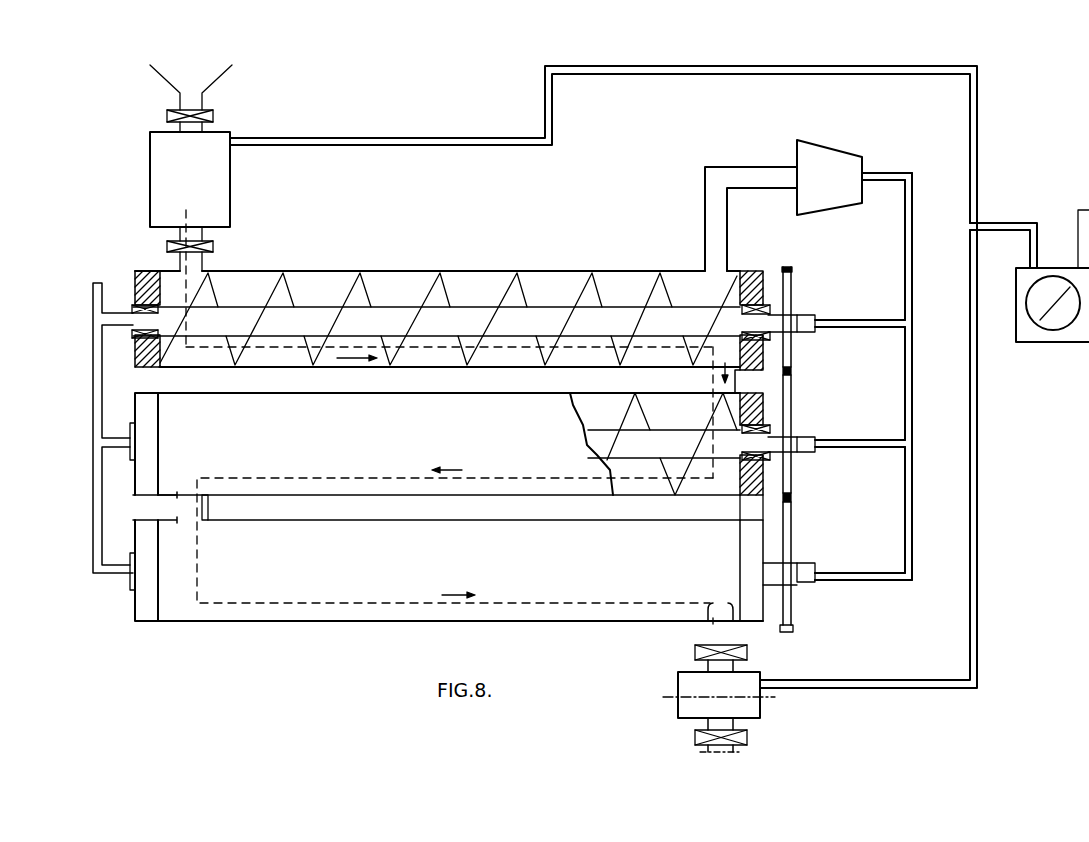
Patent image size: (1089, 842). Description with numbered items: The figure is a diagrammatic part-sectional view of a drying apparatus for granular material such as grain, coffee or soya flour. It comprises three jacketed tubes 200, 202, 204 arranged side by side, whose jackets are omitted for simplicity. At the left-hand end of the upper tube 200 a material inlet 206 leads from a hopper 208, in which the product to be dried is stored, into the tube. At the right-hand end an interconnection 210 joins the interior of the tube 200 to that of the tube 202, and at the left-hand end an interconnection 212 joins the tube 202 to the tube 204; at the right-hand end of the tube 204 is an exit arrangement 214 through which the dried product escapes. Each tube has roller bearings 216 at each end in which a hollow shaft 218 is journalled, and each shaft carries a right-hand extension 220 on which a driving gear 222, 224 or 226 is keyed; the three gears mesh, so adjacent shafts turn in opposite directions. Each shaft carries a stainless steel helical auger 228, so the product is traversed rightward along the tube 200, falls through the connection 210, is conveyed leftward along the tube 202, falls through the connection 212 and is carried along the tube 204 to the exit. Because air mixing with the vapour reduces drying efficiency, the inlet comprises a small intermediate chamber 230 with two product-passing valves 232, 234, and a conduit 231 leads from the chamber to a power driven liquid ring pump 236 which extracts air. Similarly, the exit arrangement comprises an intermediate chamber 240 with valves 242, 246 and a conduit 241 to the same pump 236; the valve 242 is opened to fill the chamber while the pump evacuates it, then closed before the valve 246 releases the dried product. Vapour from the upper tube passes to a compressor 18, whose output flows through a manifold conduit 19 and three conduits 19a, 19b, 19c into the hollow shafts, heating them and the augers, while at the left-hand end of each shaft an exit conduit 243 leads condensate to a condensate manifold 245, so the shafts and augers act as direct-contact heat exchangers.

The compressor 18 is at (823, 155).
The manifold conduit 19 is at (912, 391).
The conduit 19a is at (850, 327).
The conduit 19b is at (868, 447).
The conduit 19c is at (862, 580).
The upper tube 200 is at (483, 271).
The tube 202 is at (435, 375).
The tube 204 is at (440, 515).
The material inlet 206 is at (145, 150).
The hopper 208 is at (160, 74).
The interconnection 210 is at (705, 384).
The interconnection 212 is at (208, 503).
The exit arrangement 214 is at (765, 666).
The roller bearings 216 is at (150, 297).
The hollow shaft 218 is at (392, 320).
The extension 220 is at (807, 332).
The driving gear 222 is at (790, 280).
The driving gear 224 is at (787, 423).
The driving gear 226 is at (792, 513).
The helical auger 228 is at (277, 293).
The intermediate chamber 230 is at (220, 215).
The conduit 231 is at (412, 145).
The valve 232 is at (215, 115).
The valve 234 is at (215, 248).
The liquid ring pump 236 is at (1042, 342).
The intermediate chamber 240 is at (678, 683).
The conduit 241 is at (862, 688).
The valve 242 is at (696, 648).
The exit conduit 243 is at (113, 440).
The condensate manifold 245 is at (100, 515).
The valve 246 is at (747, 738).